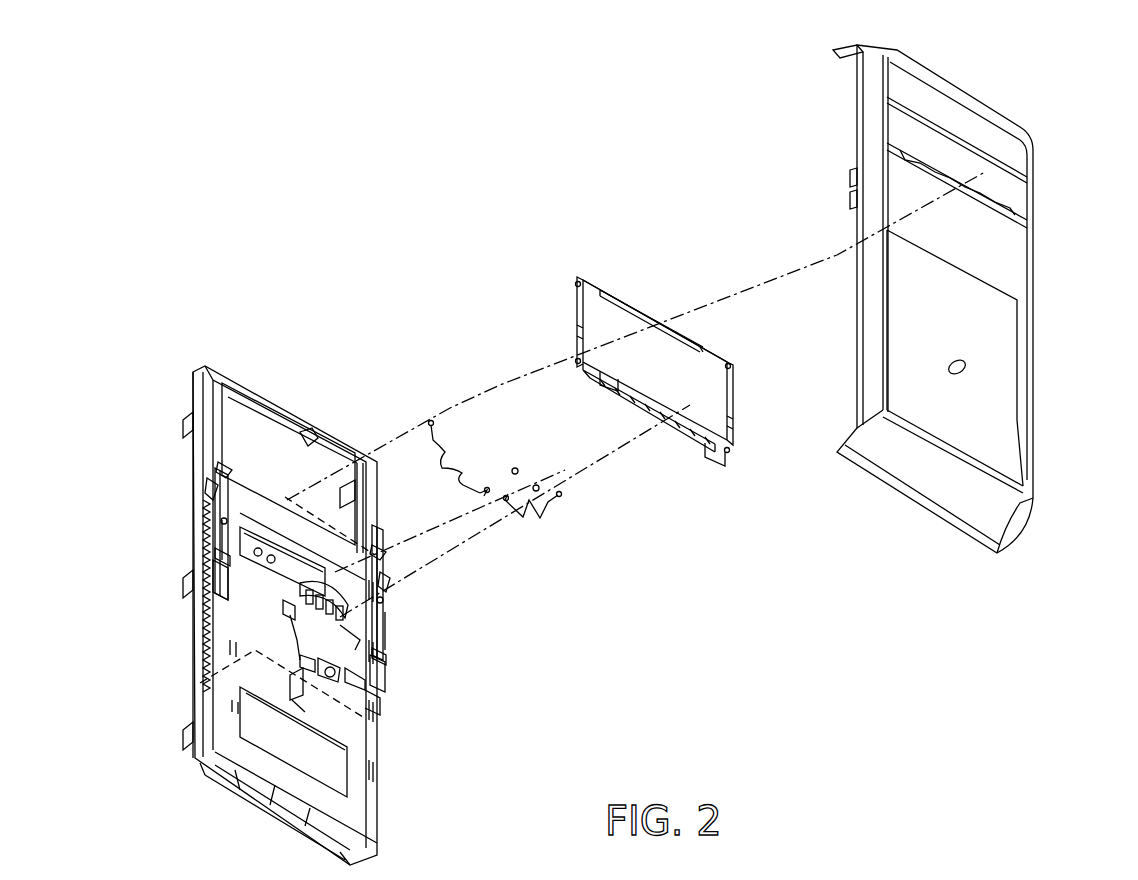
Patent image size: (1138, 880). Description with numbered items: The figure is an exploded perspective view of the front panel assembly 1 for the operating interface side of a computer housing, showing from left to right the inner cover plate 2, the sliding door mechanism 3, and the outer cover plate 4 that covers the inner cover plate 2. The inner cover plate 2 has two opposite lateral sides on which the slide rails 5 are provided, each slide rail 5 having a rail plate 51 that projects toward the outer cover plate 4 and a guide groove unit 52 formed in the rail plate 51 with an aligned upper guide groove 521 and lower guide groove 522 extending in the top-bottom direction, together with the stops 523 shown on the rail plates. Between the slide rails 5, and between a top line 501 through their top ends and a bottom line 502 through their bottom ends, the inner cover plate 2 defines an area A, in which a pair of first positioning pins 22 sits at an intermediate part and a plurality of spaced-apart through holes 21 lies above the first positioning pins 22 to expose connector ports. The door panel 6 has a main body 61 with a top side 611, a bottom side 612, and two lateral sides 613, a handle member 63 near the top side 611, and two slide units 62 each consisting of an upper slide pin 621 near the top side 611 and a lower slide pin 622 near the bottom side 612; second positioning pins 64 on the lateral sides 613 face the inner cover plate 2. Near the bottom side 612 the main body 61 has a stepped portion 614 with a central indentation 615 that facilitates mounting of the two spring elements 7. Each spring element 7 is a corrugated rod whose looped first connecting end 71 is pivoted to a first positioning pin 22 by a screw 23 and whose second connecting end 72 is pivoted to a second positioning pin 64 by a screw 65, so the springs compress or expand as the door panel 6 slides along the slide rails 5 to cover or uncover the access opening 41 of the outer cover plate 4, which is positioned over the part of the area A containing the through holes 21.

The front panel assembly 1 is at (243, 272).
The inner cover plate 2 is at (326, 432).
The sliding door mechanism 3 is at (389, 403).
The outer cover plate 4 is at (997, 512).
The slide rail 5 is at (222, 470).
The door panel 6 is at (675, 296).
The spring element 7 is at (452, 470).
The through holes 21 is at (319, 610).
The first positioning pin 22 is at (314, 669).
The screw 23 is at (536, 487).
The access opening 41 is at (1002, 267).
The rail plate 51 is at (207, 480).
The guide groove unit 52 is at (90, 540).
The main body 61 is at (720, 369).
The slide unit 62 is at (500, 282).
The handle member 63 is at (690, 322).
The second positioning pin 64 is at (582, 332).
The screw 65 is at (225, 522).
The first connecting end 71 is at (486, 488).
The second connecting end 72 is at (431, 425).
The top line 501 is at (274, 492).
The bottom line 502 is at (210, 683).
The upper guide groove 521 is at (220, 537).
The lower guide groove 522 is at (227, 593).
The stop 523 is at (222, 485).
The top side 611 is at (603, 283).
The bottom side 612 is at (600, 386).
The lateral side 613 is at (577, 308).
The stepped portion 614 is at (711, 456).
The indentation 615 is at (661, 425).
The upper slide pin 621 is at (577, 287).
The lower slide pin 622 is at (577, 363).
The area A is at (378, 712).